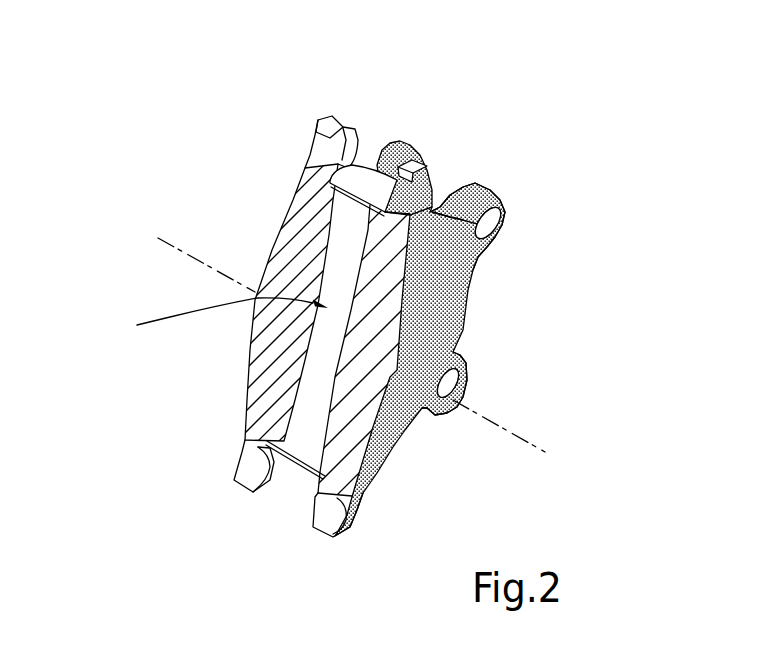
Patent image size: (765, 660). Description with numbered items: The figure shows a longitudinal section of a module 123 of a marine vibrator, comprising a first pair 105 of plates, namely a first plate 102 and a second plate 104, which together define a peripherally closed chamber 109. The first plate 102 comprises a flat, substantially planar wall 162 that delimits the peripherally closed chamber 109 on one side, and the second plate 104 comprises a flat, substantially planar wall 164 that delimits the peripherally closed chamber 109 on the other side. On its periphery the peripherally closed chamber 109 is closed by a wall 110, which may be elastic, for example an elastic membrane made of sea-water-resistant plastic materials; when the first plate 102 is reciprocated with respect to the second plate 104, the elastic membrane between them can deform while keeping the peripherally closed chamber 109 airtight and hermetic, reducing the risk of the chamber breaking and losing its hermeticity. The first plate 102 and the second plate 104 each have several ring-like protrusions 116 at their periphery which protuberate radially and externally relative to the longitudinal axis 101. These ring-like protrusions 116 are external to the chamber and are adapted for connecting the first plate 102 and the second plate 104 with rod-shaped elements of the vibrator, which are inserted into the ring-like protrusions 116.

The longitudinal axis 101 is at (190, 260).
The first plate 102 is at (258, 411).
The second plate 104 is at (393, 428).
The first pair of plates 105 is at (374, 600).
The peripherally closed chamber 109 is at (208, 320).
The wall 110 is at (372, 183).
The ring-like protrusions 116 is at (393, 150).
The module 123 is at (250, 95).
The flat wall 162 is at (283, 343).
The flat wall 164 is at (351, 268).